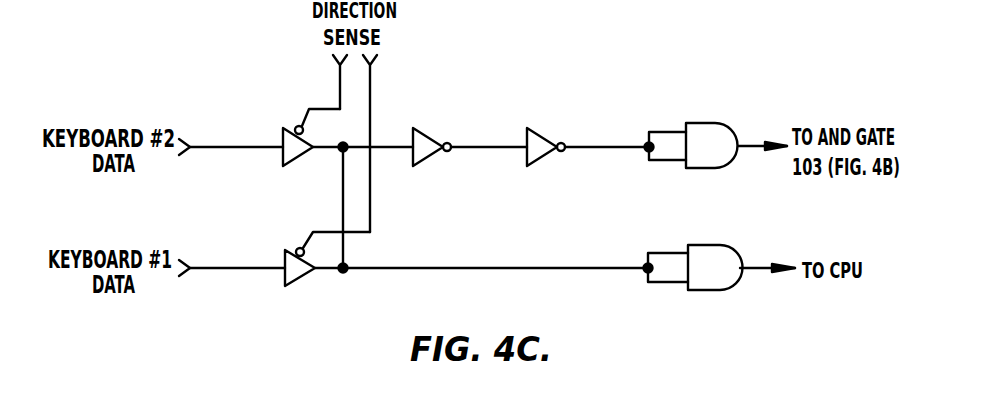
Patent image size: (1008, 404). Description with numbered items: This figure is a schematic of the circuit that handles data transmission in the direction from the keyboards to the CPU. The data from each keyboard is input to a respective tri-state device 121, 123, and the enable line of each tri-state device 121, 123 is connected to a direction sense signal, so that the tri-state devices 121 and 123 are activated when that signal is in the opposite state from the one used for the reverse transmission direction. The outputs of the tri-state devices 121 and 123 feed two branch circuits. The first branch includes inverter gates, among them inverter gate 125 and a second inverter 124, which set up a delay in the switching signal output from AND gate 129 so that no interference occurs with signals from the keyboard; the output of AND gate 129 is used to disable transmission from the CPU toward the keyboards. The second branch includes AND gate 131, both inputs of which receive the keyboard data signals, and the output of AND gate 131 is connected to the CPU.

The tri-state device 121 is at (290, 162).
The tri-state device 123 is at (293, 283).
The inverter gate 125 is at (437, 121).
The inverter 124 is at (551, 121).
The AND gate 129 is at (718, 122).
The AND gate 131 is at (722, 243).